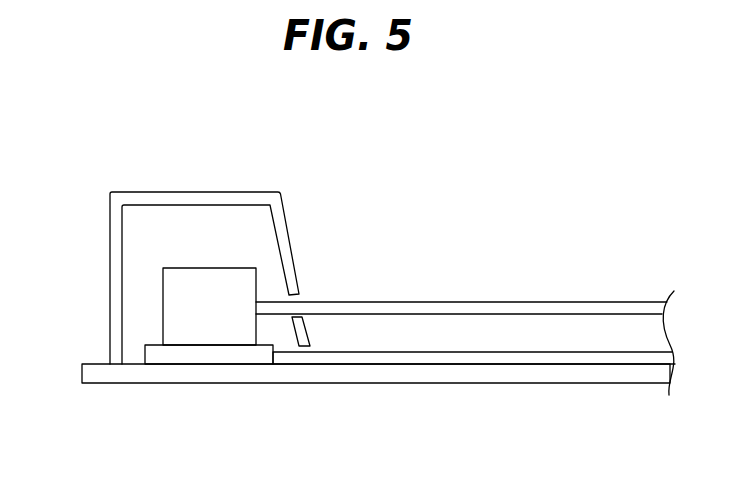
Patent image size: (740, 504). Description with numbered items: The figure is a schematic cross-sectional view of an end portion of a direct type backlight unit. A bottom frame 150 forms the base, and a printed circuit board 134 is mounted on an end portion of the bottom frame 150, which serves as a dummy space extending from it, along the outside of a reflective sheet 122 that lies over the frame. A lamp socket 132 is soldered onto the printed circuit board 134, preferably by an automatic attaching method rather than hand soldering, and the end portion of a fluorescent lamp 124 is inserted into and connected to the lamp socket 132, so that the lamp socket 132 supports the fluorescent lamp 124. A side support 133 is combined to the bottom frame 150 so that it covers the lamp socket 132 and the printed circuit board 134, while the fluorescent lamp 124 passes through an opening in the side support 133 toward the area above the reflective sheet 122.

The reflective sheet 122 is at (543, 360).
The fluorescent lamp 124 is at (510, 303).
The lamp socket 132 is at (165, 295).
The side support 133 is at (223, 193).
The printed circuit board 134 is at (183, 357).
The bottom frame 150 is at (330, 377).